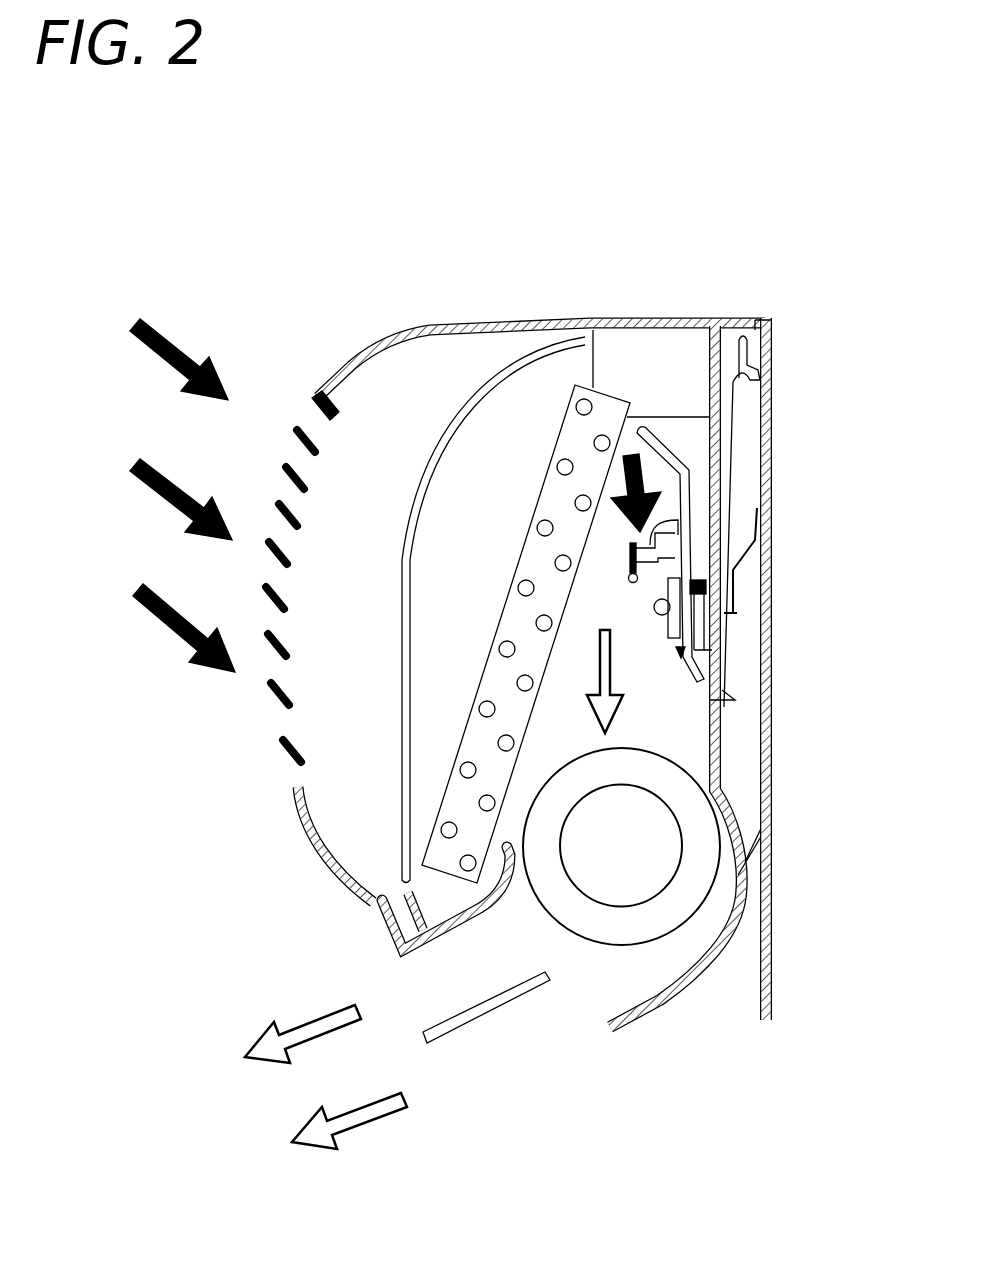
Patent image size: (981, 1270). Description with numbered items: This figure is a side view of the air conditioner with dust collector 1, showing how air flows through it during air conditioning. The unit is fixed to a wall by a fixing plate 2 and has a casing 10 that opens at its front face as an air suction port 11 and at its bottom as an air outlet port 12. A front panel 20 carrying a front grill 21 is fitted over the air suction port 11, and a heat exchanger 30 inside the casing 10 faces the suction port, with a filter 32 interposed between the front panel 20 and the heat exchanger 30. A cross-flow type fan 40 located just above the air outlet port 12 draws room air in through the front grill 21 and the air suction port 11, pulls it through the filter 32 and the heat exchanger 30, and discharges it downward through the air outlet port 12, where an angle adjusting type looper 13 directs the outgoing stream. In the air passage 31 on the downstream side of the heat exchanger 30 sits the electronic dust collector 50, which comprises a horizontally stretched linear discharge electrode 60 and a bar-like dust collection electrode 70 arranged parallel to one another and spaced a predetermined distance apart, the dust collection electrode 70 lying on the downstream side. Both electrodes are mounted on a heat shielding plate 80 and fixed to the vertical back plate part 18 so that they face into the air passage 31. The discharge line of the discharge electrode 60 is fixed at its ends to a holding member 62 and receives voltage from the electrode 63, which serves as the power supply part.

The air conditioner with dust collector 1 is at (284, 218).
The fixing plate 2 is at (773, 584).
The casing 10 is at (690, 318).
The air suction port 11 is at (383, 572).
The air outlet port 12 is at (535, 1008).
The angle adjusting type looper 13 is at (457, 1032).
The vertical back plate part 18 is at (723, 692).
The front panel 20 is at (527, 320).
The front grill 21 is at (283, 753).
The heat exchanger 30 is at (603, 407).
The air passage 31 is at (573, 660).
The filter 32 is at (470, 397).
The cross-flow type fan 40 is at (625, 938).
The electronic dust collector 50 is at (617, 590).
The discharge electrode 60 is at (636, 583).
The holding member 62 is at (755, 513).
The electrode 63 is at (632, 546).
The dust collection electrode 70 is at (657, 617).
The heat shielding plate 80 is at (718, 432).